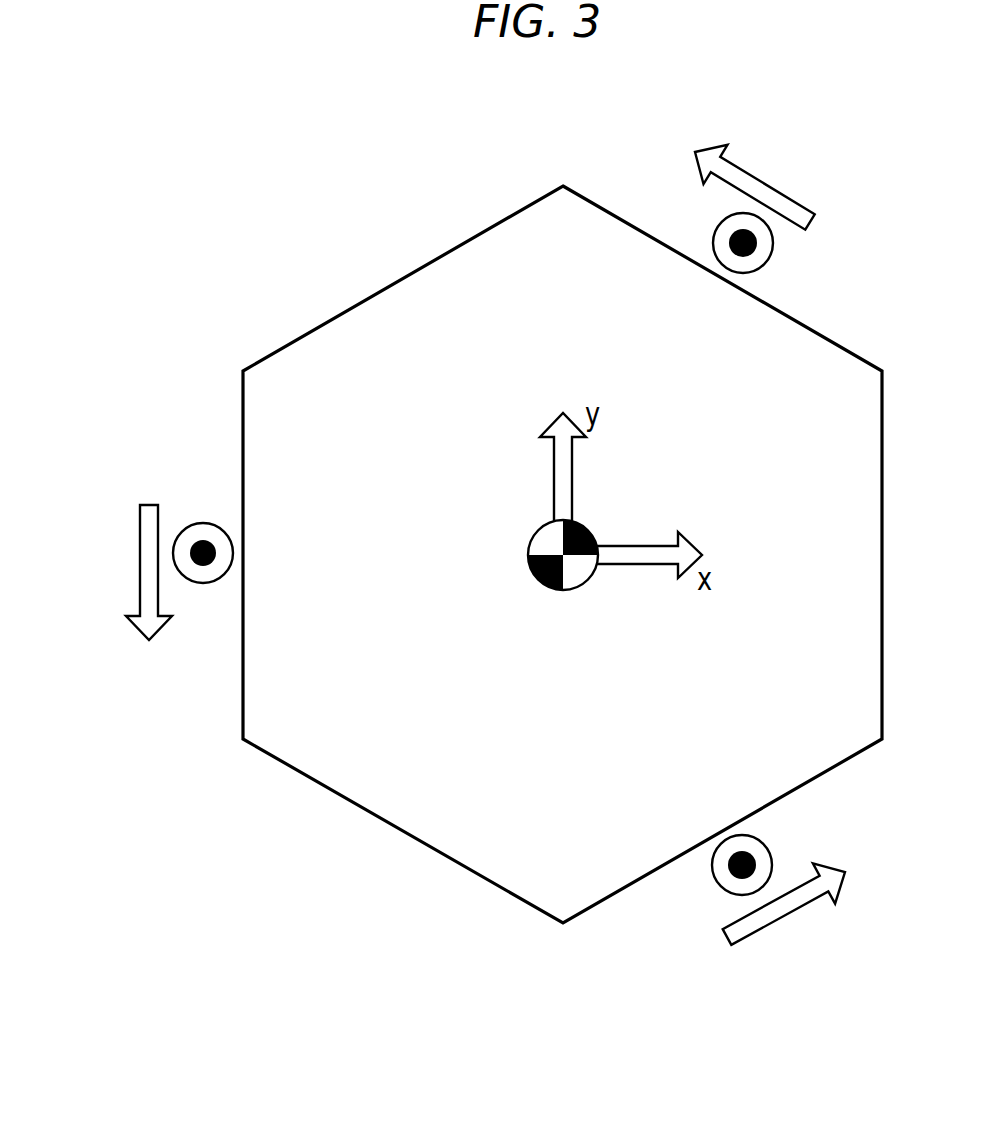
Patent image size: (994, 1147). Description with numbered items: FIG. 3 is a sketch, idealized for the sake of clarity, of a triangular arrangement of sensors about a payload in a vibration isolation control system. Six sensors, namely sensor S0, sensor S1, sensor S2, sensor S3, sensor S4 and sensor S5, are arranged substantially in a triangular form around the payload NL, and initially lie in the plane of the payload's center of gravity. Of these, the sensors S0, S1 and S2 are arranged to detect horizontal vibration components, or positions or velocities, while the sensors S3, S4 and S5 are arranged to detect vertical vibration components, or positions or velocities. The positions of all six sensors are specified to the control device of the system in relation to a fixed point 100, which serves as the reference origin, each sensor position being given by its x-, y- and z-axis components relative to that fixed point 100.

The payload NL is at (408, 845).
The fixed point 100 is at (537, 580).
The sensor S0 is at (784, 922).
The sensor S1 is at (140, 562).
The sensor S2 is at (762, 180).
The sensor S3 is at (772, 850).
The sensor S4 is at (203, 584).
The sensor S5 is at (772, 252).